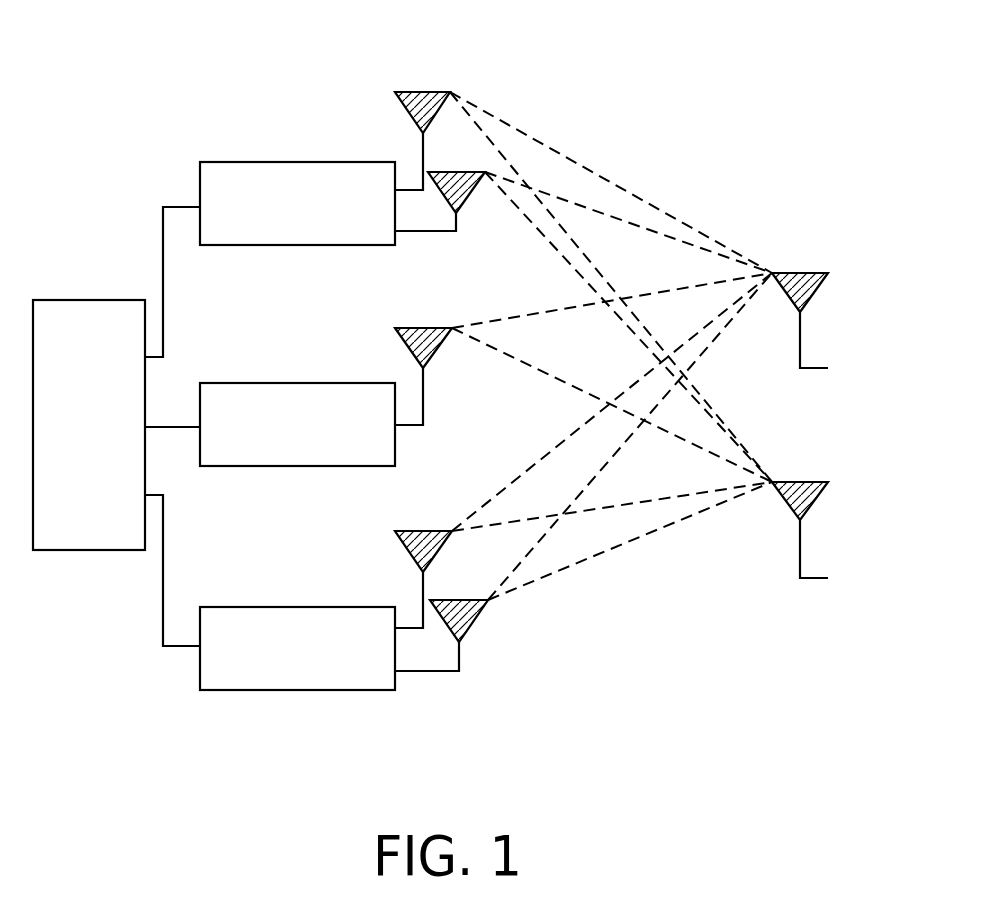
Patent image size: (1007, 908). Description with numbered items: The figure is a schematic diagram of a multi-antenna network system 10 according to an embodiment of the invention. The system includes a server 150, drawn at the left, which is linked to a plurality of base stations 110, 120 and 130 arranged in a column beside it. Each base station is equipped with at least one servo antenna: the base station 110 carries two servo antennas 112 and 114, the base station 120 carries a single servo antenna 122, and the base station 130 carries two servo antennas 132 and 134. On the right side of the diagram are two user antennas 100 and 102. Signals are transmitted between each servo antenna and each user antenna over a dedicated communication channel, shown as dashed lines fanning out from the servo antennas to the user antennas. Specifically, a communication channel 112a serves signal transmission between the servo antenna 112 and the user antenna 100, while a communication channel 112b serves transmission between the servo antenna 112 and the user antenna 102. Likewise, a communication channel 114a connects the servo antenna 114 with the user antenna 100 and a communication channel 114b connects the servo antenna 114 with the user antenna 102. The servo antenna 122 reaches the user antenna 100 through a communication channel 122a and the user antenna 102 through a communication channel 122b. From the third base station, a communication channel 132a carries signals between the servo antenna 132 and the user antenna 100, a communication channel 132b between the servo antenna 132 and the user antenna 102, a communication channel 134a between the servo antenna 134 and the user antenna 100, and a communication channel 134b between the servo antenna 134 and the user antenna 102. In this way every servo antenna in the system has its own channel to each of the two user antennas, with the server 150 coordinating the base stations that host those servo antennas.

The multi-antenna network system 10 is at (762, 726).
The user antenna 100 is at (812, 295).
The user antenna 102 is at (812, 503).
The base station 110 is at (323, 241).
The servo antenna 112 is at (423, 90).
The communication channel 112a is at (590, 170).
The communication channel 112b is at (708, 403).
The servo antenna 114 is at (456, 171).
The communication channel 114a is at (600, 214).
The communication channel 114b is at (530, 222).
The base station 120 is at (323, 463).
The servo antenna 122 is at (423, 327).
The communication channel 122a is at (550, 312).
The communication channel 122b is at (522, 363).
The base station 130 is at (323, 686).
The servo antenna 132 is at (423, 530).
The communication channel 132a is at (530, 467).
The communication channel 132b is at (483, 527).
The servo antenna 134 is at (466, 630).
The communication channel 134a is at (603, 467).
The communication channel 134b is at (585, 560).
The server 150 is at (115, 486).